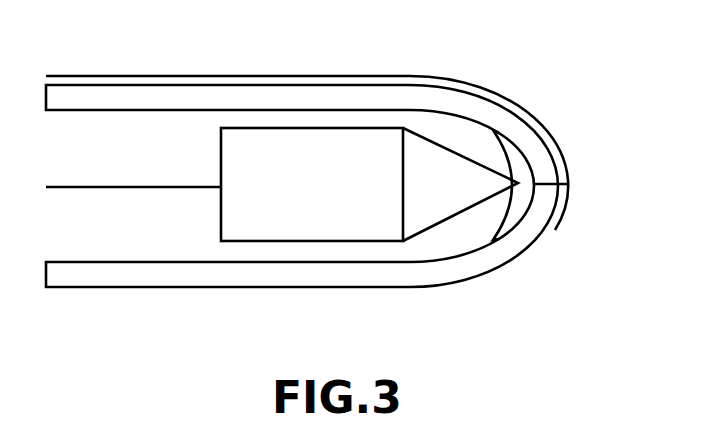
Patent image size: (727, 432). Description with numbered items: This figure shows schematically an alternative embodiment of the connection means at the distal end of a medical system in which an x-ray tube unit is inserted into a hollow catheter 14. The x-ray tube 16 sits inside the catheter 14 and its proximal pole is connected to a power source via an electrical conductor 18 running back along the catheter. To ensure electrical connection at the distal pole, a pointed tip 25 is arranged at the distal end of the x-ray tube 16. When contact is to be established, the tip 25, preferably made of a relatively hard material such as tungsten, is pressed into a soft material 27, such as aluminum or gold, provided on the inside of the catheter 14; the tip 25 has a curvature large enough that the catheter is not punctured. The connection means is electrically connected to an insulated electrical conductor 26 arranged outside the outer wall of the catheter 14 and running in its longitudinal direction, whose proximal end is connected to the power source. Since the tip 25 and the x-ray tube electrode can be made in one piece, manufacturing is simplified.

The hollow catheter 14 is at (137, 292).
The x-ray tube 16 is at (323, 196).
The electrical conductor 18 is at (135, 188).
The pointed tip 25 is at (473, 182).
The insulated electrical conductor 26 is at (312, 74).
The soft material 27 is at (520, 207).